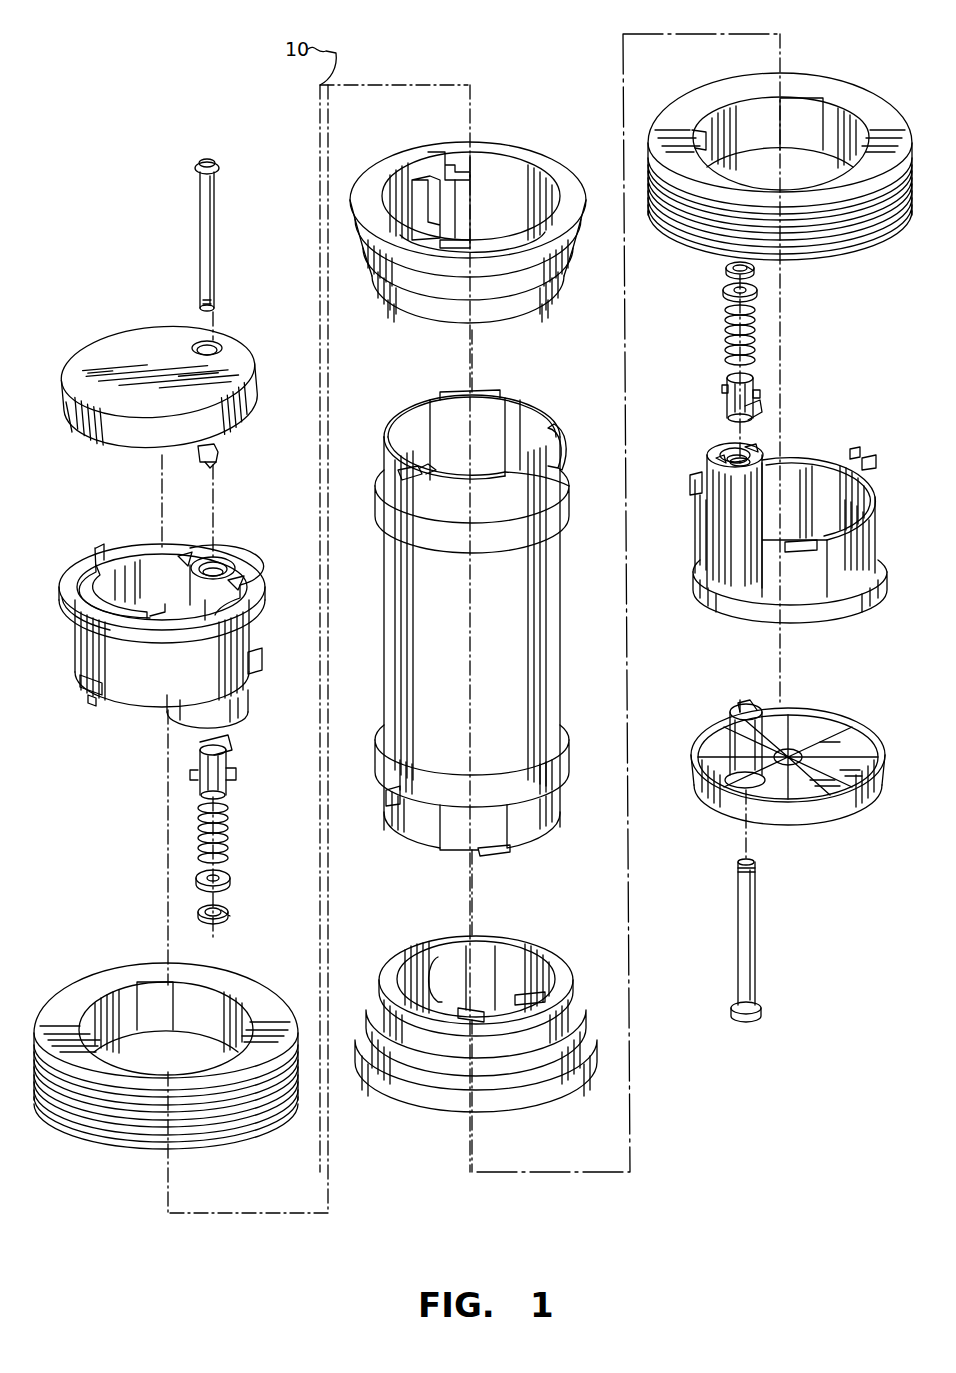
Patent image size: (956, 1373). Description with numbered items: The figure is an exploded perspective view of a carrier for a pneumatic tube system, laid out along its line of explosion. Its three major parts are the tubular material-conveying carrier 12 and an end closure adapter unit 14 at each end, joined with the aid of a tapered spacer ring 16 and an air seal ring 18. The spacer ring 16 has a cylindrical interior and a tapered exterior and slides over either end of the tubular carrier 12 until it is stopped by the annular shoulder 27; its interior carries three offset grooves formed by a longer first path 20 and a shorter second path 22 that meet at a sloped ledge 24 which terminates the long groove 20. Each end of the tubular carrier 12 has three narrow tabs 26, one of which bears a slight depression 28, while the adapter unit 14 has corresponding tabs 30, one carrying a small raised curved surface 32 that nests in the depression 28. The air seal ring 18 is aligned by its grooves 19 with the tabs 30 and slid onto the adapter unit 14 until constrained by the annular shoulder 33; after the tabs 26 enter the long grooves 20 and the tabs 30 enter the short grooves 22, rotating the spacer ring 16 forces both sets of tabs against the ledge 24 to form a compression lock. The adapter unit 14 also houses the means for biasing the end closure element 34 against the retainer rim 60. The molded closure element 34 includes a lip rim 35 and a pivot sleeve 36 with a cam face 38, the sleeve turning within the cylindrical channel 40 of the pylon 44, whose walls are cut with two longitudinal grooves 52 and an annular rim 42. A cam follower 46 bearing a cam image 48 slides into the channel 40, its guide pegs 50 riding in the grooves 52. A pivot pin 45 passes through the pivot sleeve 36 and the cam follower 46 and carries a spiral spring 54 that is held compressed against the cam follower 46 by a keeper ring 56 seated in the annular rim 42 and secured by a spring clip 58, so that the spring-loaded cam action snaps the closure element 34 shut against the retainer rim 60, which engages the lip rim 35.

The tubular material-conveying carrier 12 is at (563, 666).
The end closure adapter unit 14 is at (248, 645).
The tapered spacer ring 16 is at (543, 165).
The air seal ring 18 is at (124, 1146).
The grooves 19 is at (152, 991).
The first path (long groove) 20 is at (442, 195).
The second path (short groove) 22 is at (420, 180).
The sloped ledge 24 is at (450, 158).
The tabs 26 is at (447, 393).
The annular shoulder 27 is at (561, 504).
The depression 28 is at (416, 473).
The tabs 30 is at (80, 688).
The raised curved surface 32 is at (96, 700).
The annular shoulder 33 is at (68, 605).
The end closure element 34 is at (108, 348).
The lip rim 35 is at (70, 423).
The pivot sleeve 36 is at (228, 449).
The cam face 38 is at (214, 468).
The cylindrical channel 40 is at (232, 560).
The annular rim 42 is at (206, 553).
The pylon 44 is at (212, 714).
The pivot pin 45 is at (214, 240).
The cam follower 46 is at (206, 780).
The cam image 48 is at (232, 747).
The guide pegs 50 is at (236, 777).
The longitudinal grooves 52 is at (753, 466).
The spiral spring 54 is at (230, 827).
The keeper ring 56 is at (232, 873).
The spring clip 58 is at (232, 905).
The retainer rim 60 is at (90, 566).